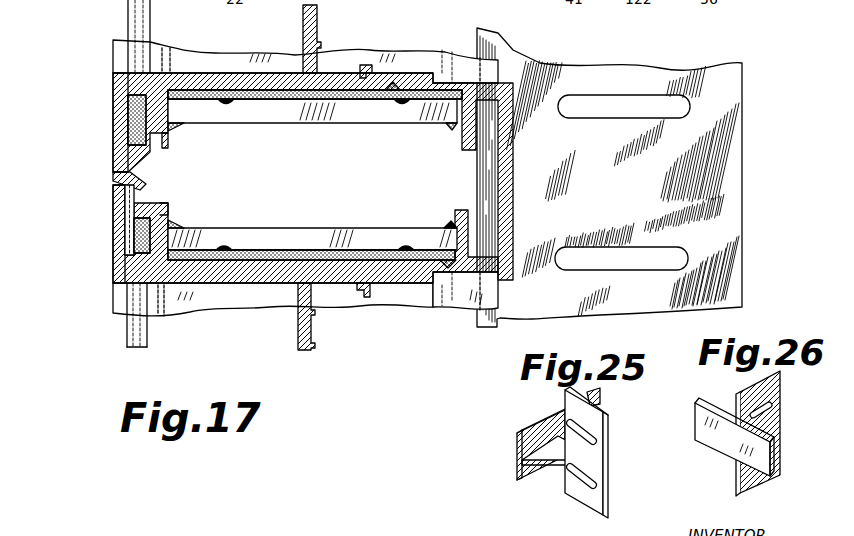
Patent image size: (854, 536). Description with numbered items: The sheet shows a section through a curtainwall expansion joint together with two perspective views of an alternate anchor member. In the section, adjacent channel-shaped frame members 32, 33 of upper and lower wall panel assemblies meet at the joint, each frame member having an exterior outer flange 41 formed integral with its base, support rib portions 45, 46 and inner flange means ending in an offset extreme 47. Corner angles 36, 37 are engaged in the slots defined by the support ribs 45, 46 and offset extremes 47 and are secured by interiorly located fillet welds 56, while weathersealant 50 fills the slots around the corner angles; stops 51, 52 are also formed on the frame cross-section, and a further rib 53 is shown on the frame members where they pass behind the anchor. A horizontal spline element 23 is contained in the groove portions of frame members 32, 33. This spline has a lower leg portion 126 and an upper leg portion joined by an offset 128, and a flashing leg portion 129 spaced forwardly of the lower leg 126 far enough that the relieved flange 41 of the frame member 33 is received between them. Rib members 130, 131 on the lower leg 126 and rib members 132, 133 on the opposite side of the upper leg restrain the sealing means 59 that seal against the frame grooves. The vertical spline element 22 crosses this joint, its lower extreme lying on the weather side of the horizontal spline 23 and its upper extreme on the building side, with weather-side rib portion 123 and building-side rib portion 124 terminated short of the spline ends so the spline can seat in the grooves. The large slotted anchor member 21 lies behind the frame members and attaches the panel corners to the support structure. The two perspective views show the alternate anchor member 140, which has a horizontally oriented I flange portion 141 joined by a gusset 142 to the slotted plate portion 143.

In FIG. 17, the anchor member 21 is at (630, 63).
In FIG. 17, the vertical spline element 22 is at (128, 33).
In FIG. 17, the horizontal spline element 23 is at (113, 184).
In FIG. 17, the frame member 32 is at (212, 70).
In FIG. 17, the frame member 33 is at (245, 310).
In FIG. 17, the corner angle 36 is at (260, 125).
In FIG. 17, the corner angle 37 is at (262, 228).
In FIG. 17, the outer flange 41 is at (113, 100).
In FIG. 17, the support rib portion 45 is at (215, 105).
In FIG. 17, the support rib portion 46 is at (392, 106).
In FIG. 17, the offset extreme 47 is at (168, 143).
In FIG. 17, the weathersealant 50 is at (322, 92).
In FIG. 17, the stop 51 is at (303, 30).
In FIG. 17, the stop 52 is at (370, 68).
In FIG. 17, the rib 53 is at (450, 72).
In FIG. 17, the fillet weld 56 is at (230, 106).
In FIG. 17, the sealing means 59 is at (130, 118).
In FIG. 17, the rib portion 123 is at (98, 328).
In FIG. 17, the rib portion 124 is at (150, 22).
In FIG. 17, the lower leg portion 126 is at (118, 250).
In FIG. 17, the offset 128 is at (116, 174).
In FIG. 17, the flashing leg portion 129 is at (113, 203).
In FIG. 17, the rib member 130 is at (168, 308).
In FIG. 17, the rib member 131 is at (142, 220).
In FIG. 17, the rib member 132 is at (128, 147).
In FIG. 17, the rib member 133 is at (115, 88).
In FIG. 25, the anchor member 140 is at (606, 496).
In FIG. 26, the anchor member 140 is at (768, 482).
In FIG. 25, the I flange portion 141 is at (540, 427).
In FIG. 26, the I flange portion 141 is at (720, 450).
In FIG. 25, the gusset 142 is at (562, 455).
In FIG. 26, the gusset 142 is at (777, 440).
In FIG. 25, the slotted plate portion 143 is at (600, 428).
In FIG. 26, the slotted plate portion 143 is at (778, 392).